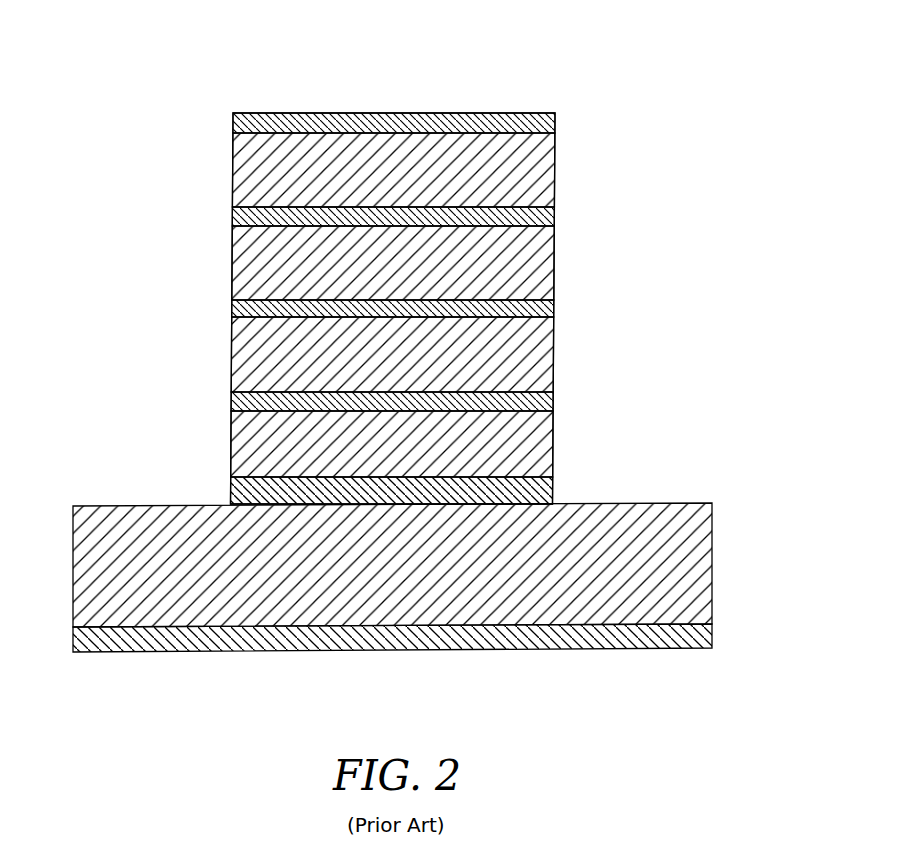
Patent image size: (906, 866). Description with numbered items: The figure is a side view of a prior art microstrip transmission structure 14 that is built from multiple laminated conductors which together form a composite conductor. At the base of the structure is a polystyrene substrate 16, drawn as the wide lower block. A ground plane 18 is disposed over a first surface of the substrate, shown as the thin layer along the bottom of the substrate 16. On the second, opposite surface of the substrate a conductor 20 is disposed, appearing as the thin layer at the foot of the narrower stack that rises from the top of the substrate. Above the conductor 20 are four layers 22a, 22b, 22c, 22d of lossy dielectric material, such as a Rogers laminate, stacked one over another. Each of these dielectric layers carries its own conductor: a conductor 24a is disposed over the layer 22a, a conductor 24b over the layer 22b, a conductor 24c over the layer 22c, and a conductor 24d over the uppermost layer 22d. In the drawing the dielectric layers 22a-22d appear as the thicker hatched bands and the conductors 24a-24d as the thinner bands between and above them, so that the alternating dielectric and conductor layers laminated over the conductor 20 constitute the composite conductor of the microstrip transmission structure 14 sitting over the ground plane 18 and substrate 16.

The microstrip transmission structure 14 is at (161, 62).
The polystyrene substrate 16 is at (698, 562).
The ground plane 18 is at (700, 637).
The conductor 20 is at (545, 489).
The layer of lossy dielectric material 22a is at (543, 441).
The layer of lossy dielectric material 22b is at (543, 356).
The layer of lossy dielectric material 22c is at (543, 270).
The layer of lossy dielectric material 22d is at (543, 181).
The conductor 24a is at (245, 401).
The conductor 24b is at (245, 309).
The conductor 24c is at (245, 217).
The conductor 24d is at (244, 124).